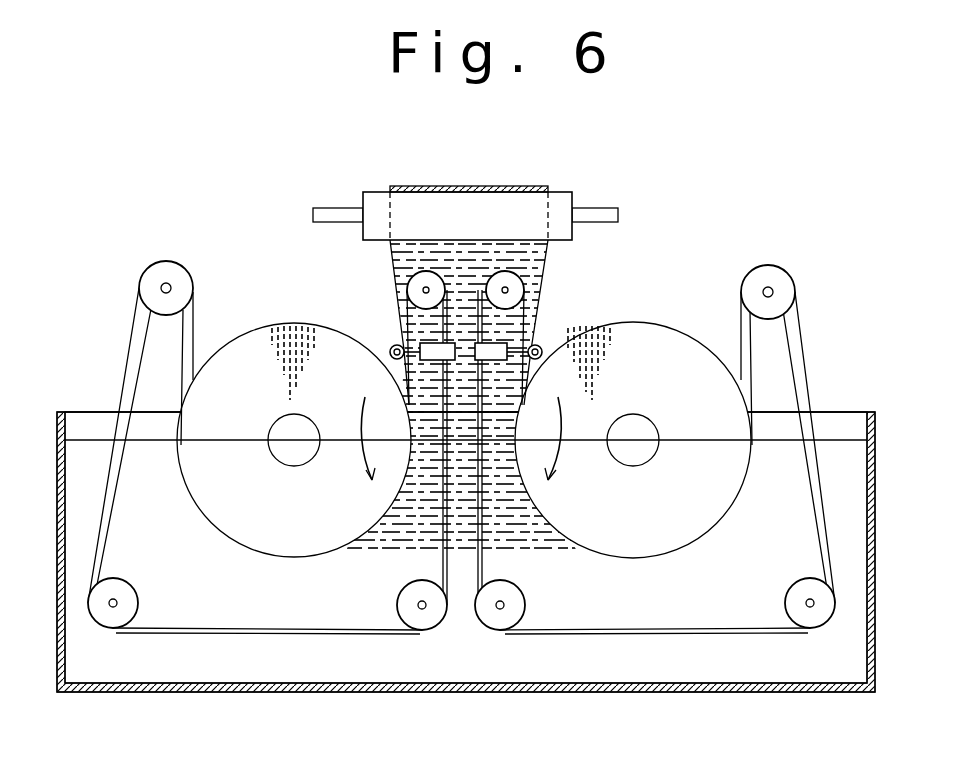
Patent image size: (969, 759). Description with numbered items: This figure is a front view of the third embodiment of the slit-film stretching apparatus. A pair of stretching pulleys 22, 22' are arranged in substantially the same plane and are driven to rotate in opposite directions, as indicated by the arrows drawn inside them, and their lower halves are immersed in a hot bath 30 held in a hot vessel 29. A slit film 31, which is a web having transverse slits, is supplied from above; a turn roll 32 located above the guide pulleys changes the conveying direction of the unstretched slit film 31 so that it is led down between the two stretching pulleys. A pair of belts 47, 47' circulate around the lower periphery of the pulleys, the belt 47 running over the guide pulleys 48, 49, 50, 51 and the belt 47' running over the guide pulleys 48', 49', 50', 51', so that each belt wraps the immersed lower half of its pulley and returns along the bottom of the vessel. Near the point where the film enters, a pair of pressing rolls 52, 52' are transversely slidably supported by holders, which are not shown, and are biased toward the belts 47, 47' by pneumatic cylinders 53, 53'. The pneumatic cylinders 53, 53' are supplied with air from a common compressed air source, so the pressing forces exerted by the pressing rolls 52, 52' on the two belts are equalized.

The stretching pulley 22 is at (294, 423).
The stretching pulley 22' is at (633, 429).
The hot vessel 29 is at (588, 692).
The hot bath 30 is at (833, 447).
The slit film 31 is at (442, 186).
The turn roll 32 is at (543, 192).
The belt 47 is at (267, 510).
The belt 47' is at (656, 511).
The guide pulley 48 is at (382, 271).
The guide pulley 48' is at (555, 272).
The guide pulley 49 is at (170, 259).
The guide pulley 49' is at (796, 262).
The guide pulley 50 is at (152, 597).
The guide pulley 50' is at (778, 597).
The guide pulley 51 is at (377, 598).
The guide pulley 51' is at (529, 598).
The pressing roll 52 is at (362, 324).
The pressing roll 52' is at (576, 324).
The pneumatic cylinder 53 is at (387, 311).
The pneumatic cylinder 53' is at (550, 311).